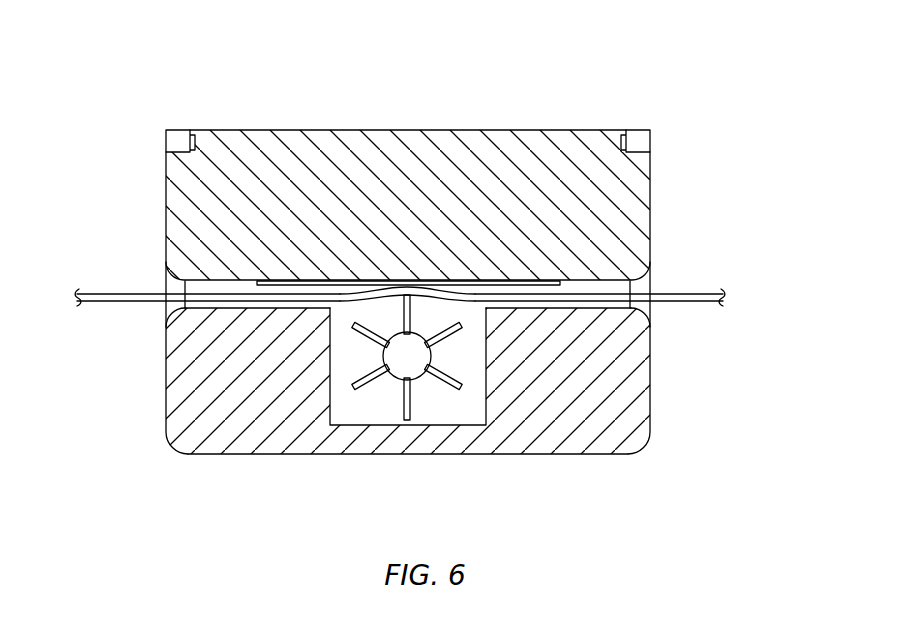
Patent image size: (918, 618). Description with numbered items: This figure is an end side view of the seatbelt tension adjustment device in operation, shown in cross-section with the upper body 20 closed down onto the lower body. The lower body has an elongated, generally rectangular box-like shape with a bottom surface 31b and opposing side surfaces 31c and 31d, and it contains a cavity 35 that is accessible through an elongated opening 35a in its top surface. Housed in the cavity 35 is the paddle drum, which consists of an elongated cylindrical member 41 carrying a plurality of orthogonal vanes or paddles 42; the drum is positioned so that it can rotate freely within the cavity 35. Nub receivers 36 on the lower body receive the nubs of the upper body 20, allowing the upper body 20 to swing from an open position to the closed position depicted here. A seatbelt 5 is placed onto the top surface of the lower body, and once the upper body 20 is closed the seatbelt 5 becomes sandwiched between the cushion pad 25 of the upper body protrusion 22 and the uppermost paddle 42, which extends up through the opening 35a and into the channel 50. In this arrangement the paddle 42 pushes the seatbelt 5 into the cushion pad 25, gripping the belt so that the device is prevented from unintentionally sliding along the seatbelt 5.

The seatbelt 5 is at (128, 294).
The upper body 20 is at (389, 128).
The upper body protrusion 22 is at (367, 238).
The cushion pad 25 is at (283, 281).
The bottom surface 31b is at (552, 455).
The side surface 31c is at (650, 398).
The side surface 31d is at (166, 398).
The cavity 35 is at (478, 356).
The elongated opening 35a is at (446, 297).
The nub receivers 36 is at (177, 139).
The elongated cylindrical member 41 is at (398, 378).
The vanes/paddles 42 is at (362, 341).
The channel 50 is at (659, 276).